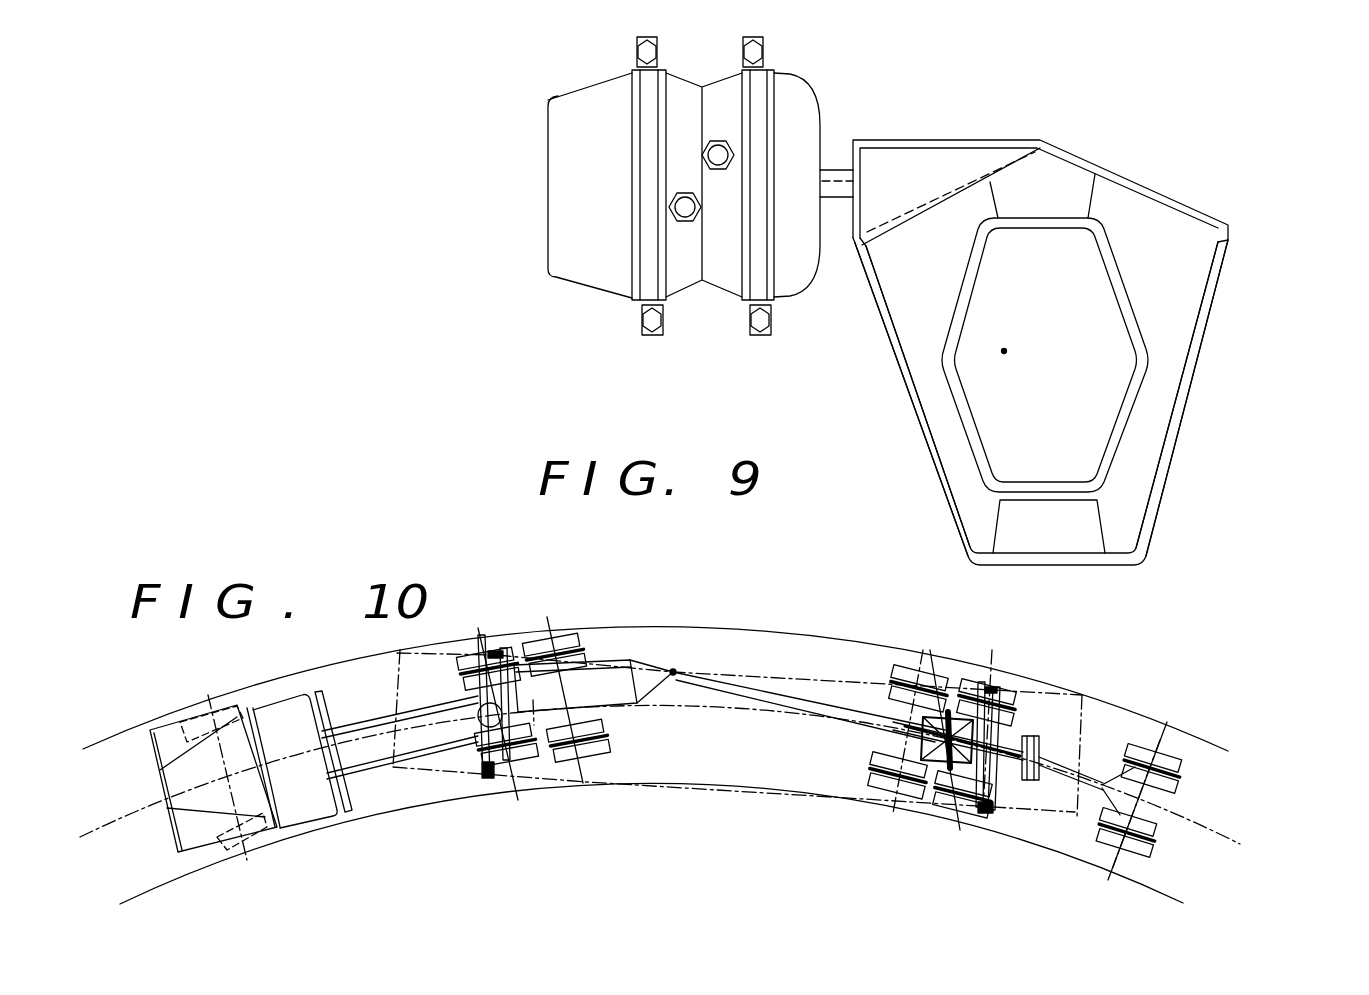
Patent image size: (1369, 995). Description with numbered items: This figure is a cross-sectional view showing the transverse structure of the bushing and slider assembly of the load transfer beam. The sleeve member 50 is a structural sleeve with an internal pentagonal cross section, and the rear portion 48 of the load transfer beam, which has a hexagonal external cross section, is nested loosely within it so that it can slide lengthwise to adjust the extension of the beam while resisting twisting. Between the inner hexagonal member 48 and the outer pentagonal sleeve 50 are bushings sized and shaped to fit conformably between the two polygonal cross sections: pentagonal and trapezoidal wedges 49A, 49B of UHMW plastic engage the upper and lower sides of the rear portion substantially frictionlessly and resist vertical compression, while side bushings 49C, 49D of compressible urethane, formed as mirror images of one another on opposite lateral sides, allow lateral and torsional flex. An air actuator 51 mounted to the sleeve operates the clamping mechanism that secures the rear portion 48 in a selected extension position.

The air actuator 51 is at (824, 87).
The sleeve member 50 is at (1202, 321).
The rear portion of the load transfer beam 48 is at (947, 432).
The pentagonal wedge bushing 49A is at (1055, 187).
The trapezoidal wedge bushing 49B is at (1040, 520).
The side bushing 49C is at (891, 318).
The side bushing 49D is at (1154, 259).